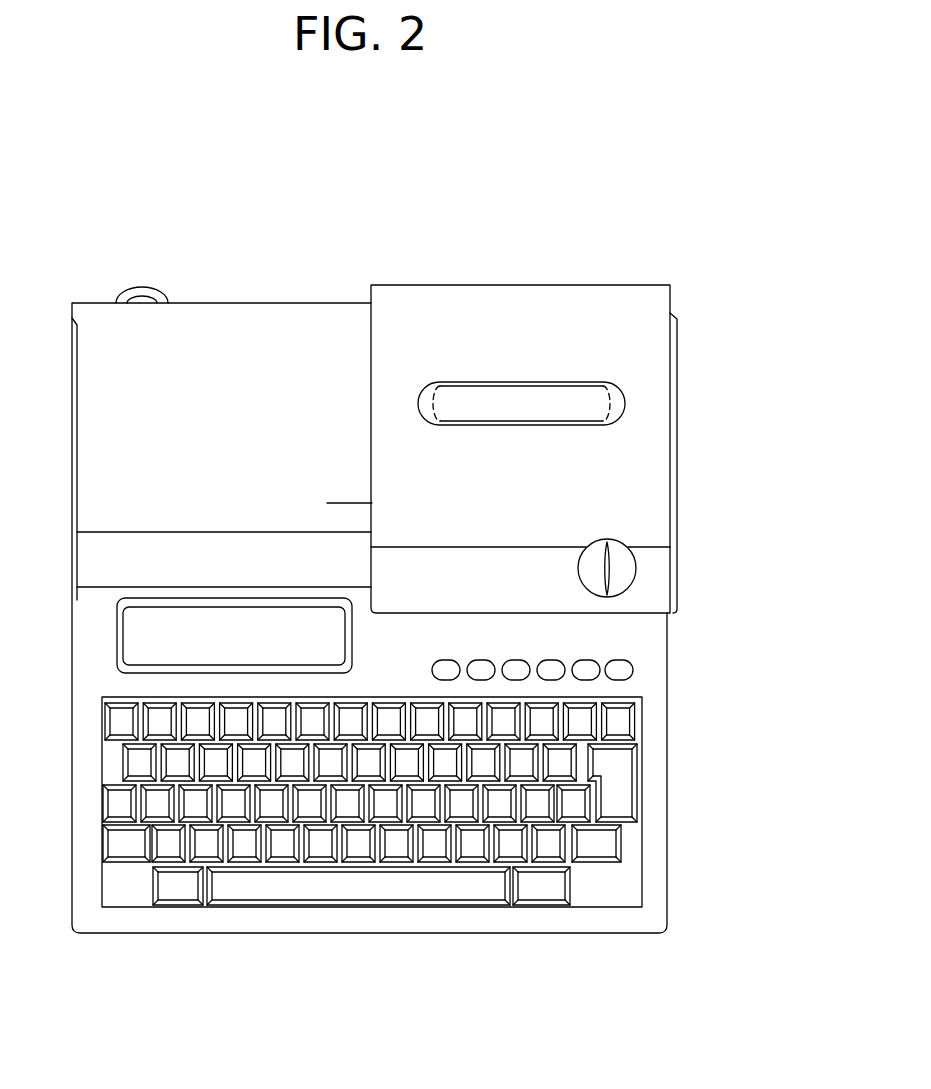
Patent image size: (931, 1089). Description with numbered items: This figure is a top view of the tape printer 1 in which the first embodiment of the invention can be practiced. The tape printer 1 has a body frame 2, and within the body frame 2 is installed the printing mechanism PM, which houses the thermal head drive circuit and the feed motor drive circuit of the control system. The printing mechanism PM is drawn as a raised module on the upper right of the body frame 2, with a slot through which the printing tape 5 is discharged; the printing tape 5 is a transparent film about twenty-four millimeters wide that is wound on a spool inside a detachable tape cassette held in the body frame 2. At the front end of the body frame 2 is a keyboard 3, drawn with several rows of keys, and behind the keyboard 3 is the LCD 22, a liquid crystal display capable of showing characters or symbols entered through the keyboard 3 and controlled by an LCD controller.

The tape printer 1 is at (617, 263).
The body frame 2 is at (678, 452).
The printing mechanism PM is at (426, 326).
The keyboard 3 is at (218, 915).
The printing tape 5 is at (347, 503).
The LCD 22 is at (118, 645).